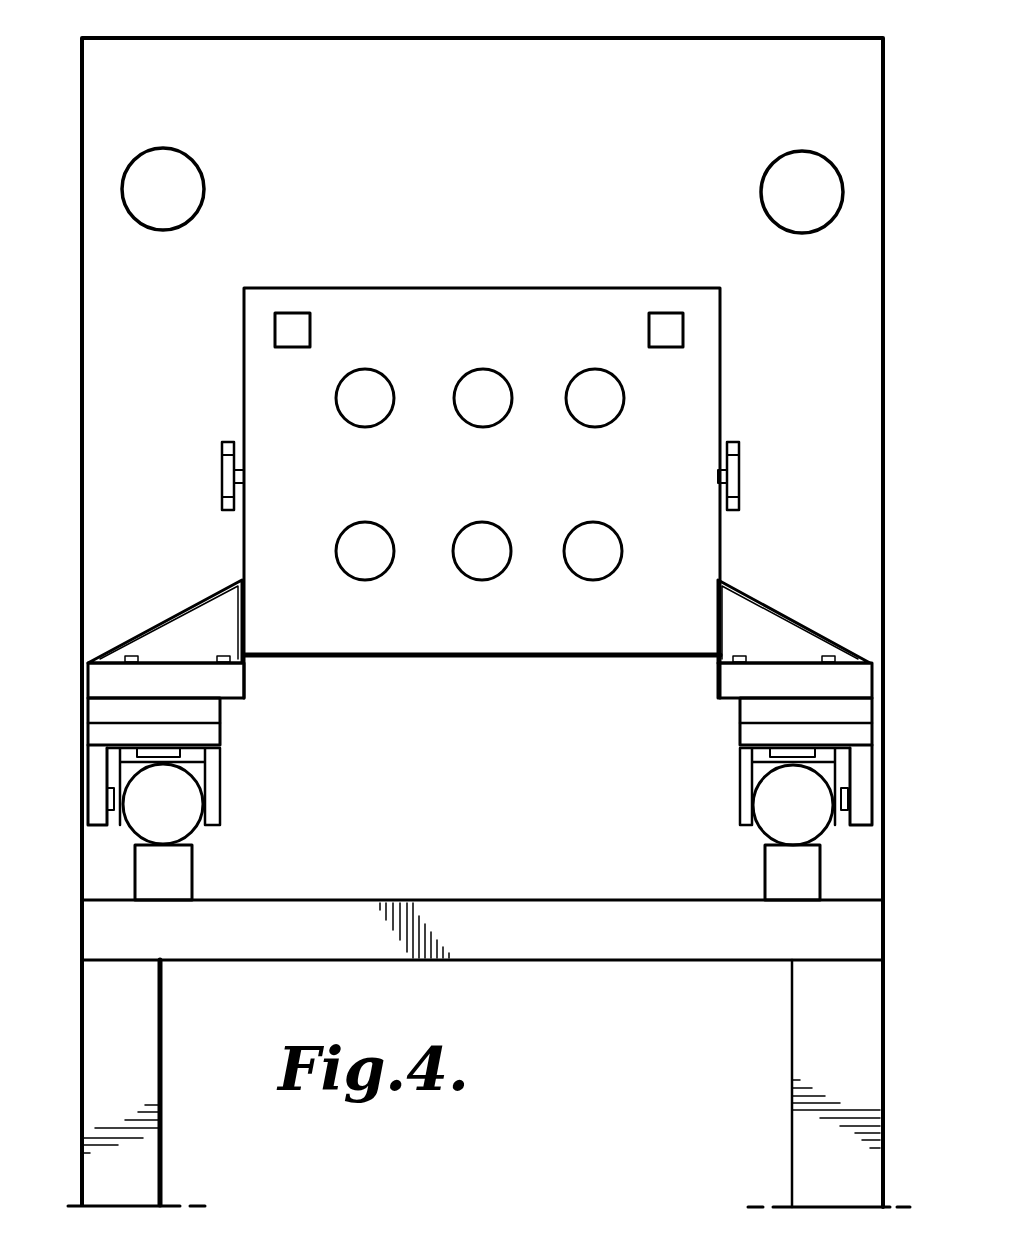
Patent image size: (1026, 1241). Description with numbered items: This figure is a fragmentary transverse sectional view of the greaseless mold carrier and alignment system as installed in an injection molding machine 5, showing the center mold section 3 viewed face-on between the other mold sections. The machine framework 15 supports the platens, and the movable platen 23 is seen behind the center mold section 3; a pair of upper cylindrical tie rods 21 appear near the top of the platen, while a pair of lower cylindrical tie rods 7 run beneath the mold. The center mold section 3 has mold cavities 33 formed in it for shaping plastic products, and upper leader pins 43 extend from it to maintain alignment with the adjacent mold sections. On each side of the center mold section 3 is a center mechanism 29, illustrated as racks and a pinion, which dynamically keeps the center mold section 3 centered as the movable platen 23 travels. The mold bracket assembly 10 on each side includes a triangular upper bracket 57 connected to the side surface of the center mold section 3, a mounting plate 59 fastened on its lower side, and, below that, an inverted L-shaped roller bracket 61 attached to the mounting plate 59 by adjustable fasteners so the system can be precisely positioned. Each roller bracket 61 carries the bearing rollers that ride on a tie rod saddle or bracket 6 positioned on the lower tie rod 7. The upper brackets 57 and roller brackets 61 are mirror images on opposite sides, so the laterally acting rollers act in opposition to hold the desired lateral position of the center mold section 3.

The injection molding machine 5 is at (68, 44).
The movable platen 23 is at (92, 258).
The upper cylindrical tie rods 21 is at (183, 168).
The center mold section 3 is at (430, 290).
The mold cavities 33 is at (458, 388).
The upper leader pins 43 is at (290, 313).
The center mechanism 29 is at (228, 442).
The triangular upper bracket 57 is at (210, 600).
The mold bracket assembly 10 is at (150, 624).
The mounting plate 59 is at (95, 708).
The inverted L-shaped roller bracket 61 is at (95, 770).
The tie rod saddle or bracket 6 is at (208, 758).
The lower cylindrical tie rod 7 is at (177, 800).
The machine framework 15 is at (180, 994).